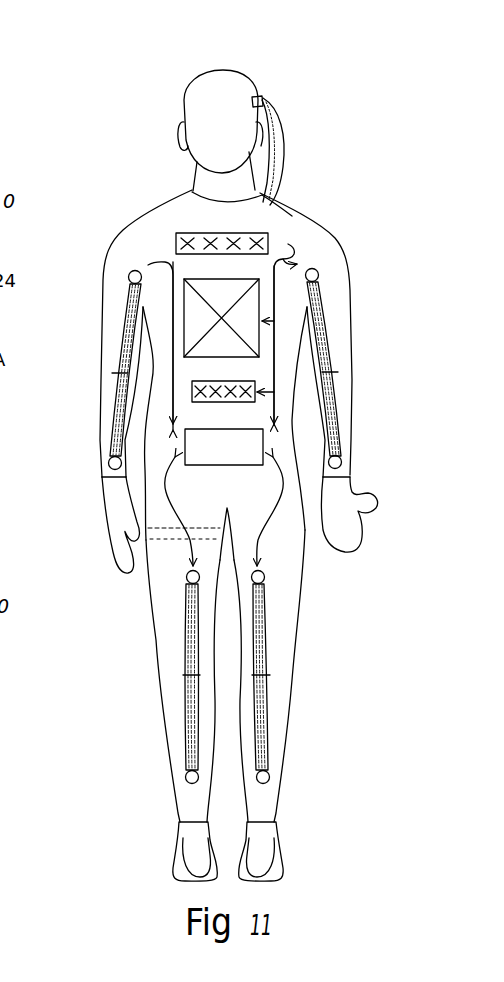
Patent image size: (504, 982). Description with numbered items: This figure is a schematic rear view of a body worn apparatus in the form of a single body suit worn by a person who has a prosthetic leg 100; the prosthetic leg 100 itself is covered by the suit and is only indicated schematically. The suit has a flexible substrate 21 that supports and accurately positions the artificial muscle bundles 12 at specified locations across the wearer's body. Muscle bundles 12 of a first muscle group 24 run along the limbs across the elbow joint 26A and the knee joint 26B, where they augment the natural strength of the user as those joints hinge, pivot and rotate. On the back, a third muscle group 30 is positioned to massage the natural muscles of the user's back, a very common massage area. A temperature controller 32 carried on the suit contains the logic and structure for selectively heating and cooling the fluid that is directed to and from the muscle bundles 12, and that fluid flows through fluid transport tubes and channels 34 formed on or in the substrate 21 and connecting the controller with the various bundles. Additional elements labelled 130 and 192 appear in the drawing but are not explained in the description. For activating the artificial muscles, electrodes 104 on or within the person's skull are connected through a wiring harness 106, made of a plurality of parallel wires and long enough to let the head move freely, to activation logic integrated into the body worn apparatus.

The muscle bundles 12 is at (113, 736).
The prosthetic leg 100 is at (118, 661).
The substrate 21 is at (290, 222).
The first muscle group 24 is at (120, 322).
The elbow joint 26A is at (81, 393).
The knee joint 26B is at (150, 662).
The third muscle group 30 is at (245, 297).
The temperature controller 32 is at (259, 456).
The fluid transport tubes and channels 34 is at (267, 268).
The electrodes 104 is at (262, 92).
The wiring harness 106 is at (290, 115).
The sensor arrays 130 is at (233, 233).
The crotch seam 192 is at (147, 538).